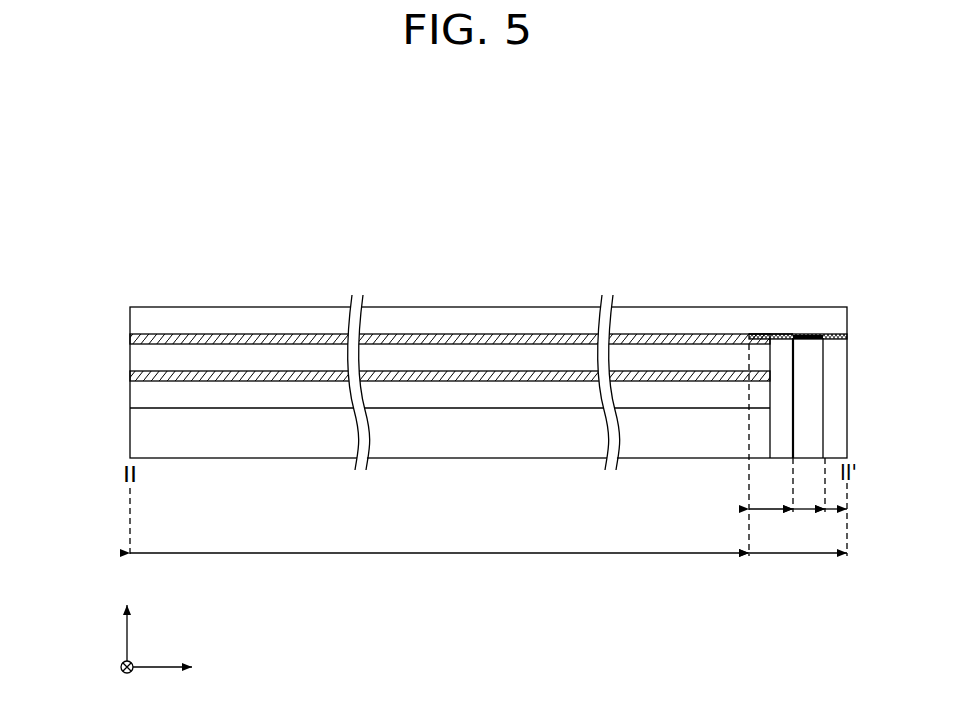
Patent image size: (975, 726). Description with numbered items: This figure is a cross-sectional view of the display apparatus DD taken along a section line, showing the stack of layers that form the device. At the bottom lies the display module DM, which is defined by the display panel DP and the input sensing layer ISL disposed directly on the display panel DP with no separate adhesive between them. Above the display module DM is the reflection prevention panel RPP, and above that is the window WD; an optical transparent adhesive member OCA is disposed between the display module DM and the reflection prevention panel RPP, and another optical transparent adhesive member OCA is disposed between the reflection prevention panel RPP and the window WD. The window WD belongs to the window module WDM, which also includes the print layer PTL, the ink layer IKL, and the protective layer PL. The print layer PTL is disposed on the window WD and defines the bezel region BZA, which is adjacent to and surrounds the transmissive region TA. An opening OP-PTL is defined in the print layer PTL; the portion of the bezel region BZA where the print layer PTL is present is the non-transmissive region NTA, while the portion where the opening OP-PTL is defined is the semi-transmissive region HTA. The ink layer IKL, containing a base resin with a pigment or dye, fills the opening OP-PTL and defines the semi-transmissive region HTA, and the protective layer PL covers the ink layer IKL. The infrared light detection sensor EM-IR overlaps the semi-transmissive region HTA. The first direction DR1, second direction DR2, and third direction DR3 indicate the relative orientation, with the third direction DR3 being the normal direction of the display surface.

The display apparatus DD is at (874, 213).
The window WD is at (142, 319).
The optical transparent adhesive member OCA is at (433, 378).
The reflection prevention panel RPP is at (142, 355).
The display module DM is at (55, 385).
The input sensing layer ISL is at (142, 392).
The display panel DP is at (142, 430).
The window module WDM is at (805, 243).
The print layer PTL is at (755, 337).
The ink layer IKL is at (795, 337).
The protective layer PL is at (808, 337).
The opening OP-PTL is at (820, 337).
The infrared light detection sensor EM-IR is at (818, 396).
The transmissive region TA is at (439, 567).
The bezel region BZA is at (798, 567).
The semi-transmissive region HTA is at (810, 508).
The non-transmissive region NTA is at (770, 511).
The first direction DR1 is at (126, 681).
The second direction DR2 is at (179, 670).
The third direction DR3 is at (126, 624).